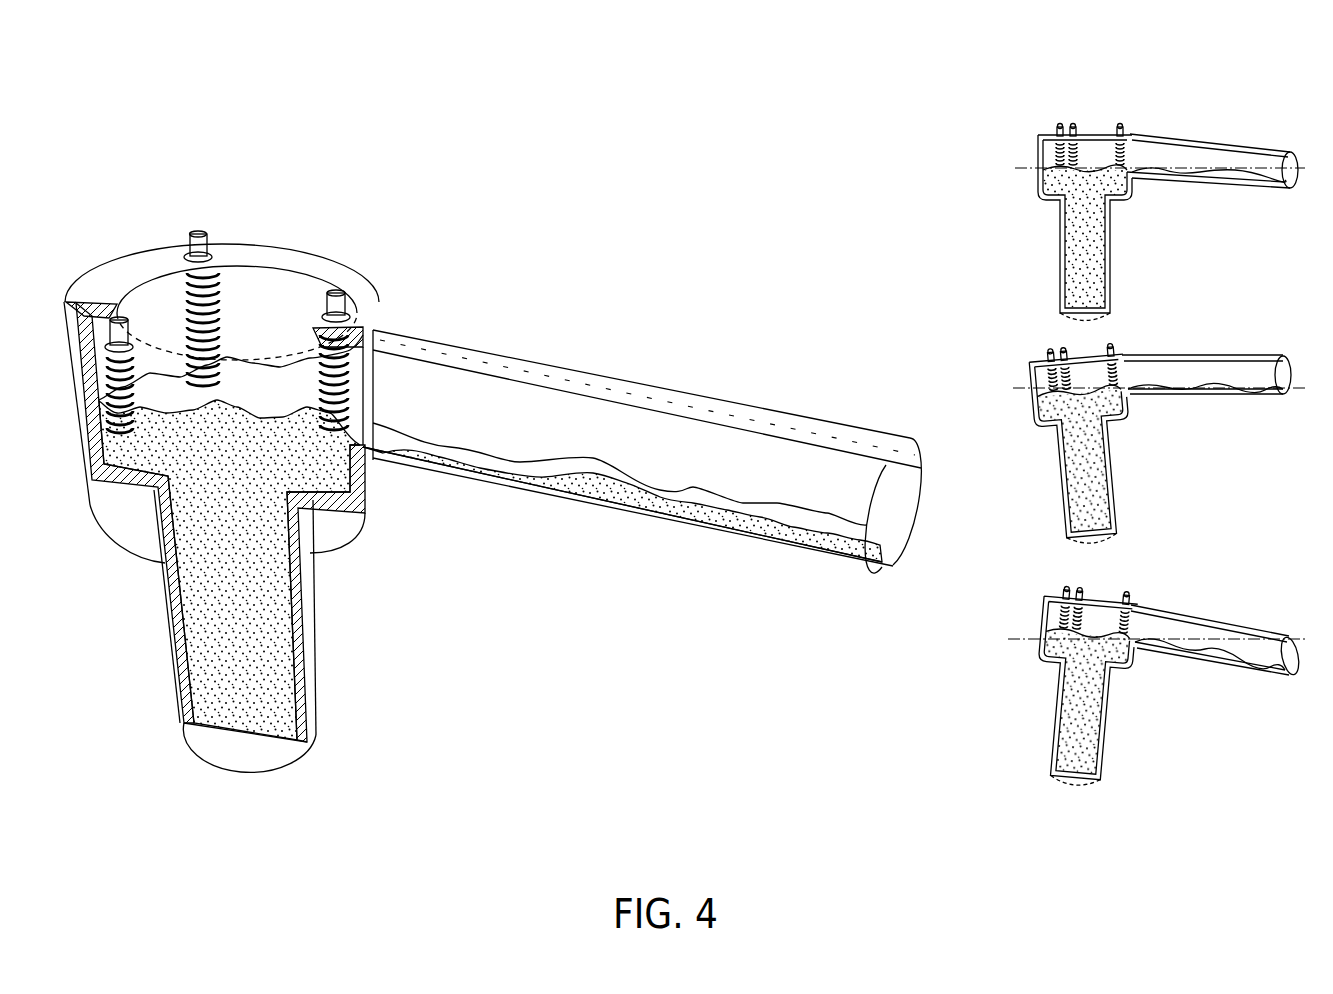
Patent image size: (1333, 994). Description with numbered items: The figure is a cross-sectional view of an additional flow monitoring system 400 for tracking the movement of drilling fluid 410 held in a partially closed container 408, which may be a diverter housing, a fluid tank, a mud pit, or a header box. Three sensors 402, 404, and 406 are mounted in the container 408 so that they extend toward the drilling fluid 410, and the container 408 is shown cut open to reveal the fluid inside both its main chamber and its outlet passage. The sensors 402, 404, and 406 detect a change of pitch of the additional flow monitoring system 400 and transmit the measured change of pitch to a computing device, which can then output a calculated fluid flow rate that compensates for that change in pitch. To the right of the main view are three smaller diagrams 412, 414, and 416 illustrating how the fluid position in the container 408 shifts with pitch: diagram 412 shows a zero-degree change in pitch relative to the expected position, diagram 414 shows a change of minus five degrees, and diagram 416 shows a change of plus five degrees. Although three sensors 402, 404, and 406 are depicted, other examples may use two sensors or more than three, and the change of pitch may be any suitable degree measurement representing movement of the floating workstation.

The additional flow monitoring system 400 is at (90, 86).
The sensor 402 is at (115, 317).
The sensor 404 is at (197, 232).
The sensor 406 is at (348, 300).
The partially closed container 408 is at (373, 484).
The drilling fluid 410 is at (255, 610).
The diagram 412 is at (1060, 262).
The diagram 414 is at (1063, 483).
The diagram 416 is at (1058, 722).